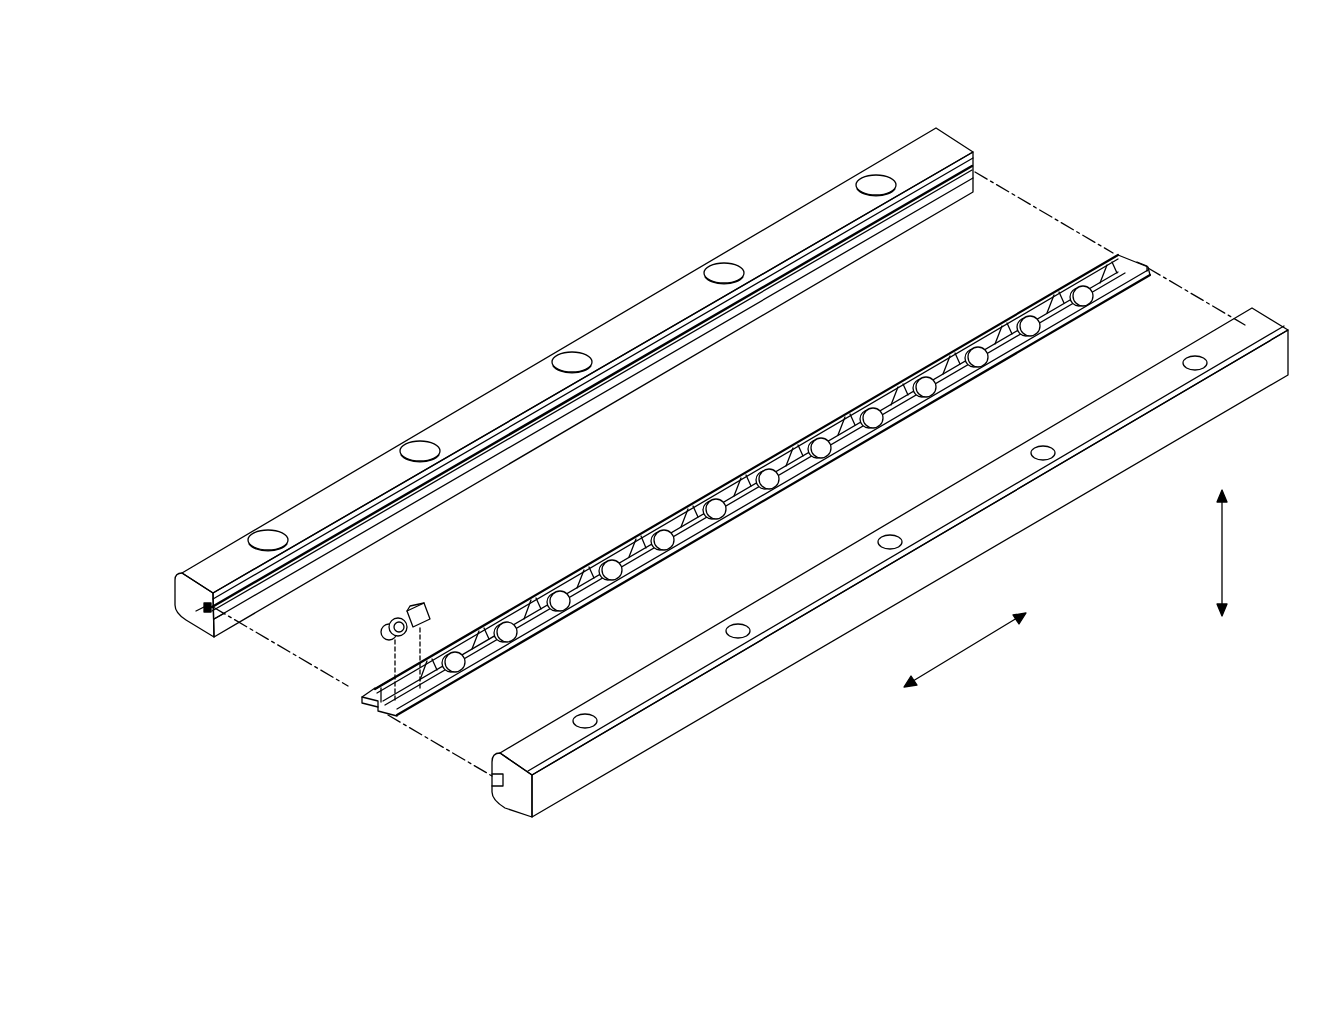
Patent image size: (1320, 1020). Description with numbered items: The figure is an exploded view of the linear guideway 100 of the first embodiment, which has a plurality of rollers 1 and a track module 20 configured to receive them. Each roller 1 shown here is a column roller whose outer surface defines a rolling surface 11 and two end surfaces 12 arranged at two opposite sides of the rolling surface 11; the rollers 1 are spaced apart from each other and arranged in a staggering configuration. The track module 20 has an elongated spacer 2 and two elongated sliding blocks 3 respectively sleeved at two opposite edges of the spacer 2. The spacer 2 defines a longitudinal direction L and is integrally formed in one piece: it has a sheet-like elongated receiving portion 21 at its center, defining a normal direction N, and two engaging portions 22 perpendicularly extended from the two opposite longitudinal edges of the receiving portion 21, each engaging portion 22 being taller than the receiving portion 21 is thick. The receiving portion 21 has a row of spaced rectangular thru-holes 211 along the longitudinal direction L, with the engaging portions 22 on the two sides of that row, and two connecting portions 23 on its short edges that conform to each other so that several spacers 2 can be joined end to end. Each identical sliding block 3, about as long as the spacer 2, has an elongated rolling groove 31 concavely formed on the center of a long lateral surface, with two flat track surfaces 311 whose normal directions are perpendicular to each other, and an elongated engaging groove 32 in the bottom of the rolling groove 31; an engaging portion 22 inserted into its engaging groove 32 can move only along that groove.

The linear guideway 100 is at (297, 151).
The roller 1 is at (330, 583).
The rolling surface 11 is at (385, 632).
The end surface 12 is at (405, 616).
The spacer 2 is at (1150, 265).
The receiving portion 21 is at (1064, 286).
The thru-hole 211 is at (384, 688).
The engaging portion 22 is at (996, 331).
The connecting portion 23 is at (1138, 262).
The track module 20 is at (1031, 137).
The sliding block 3 is at (948, 140).
The rolling groove 31 is at (229, 606).
The track surface 311 is at (400, 514).
The engaging groove 32 is at (196, 611).